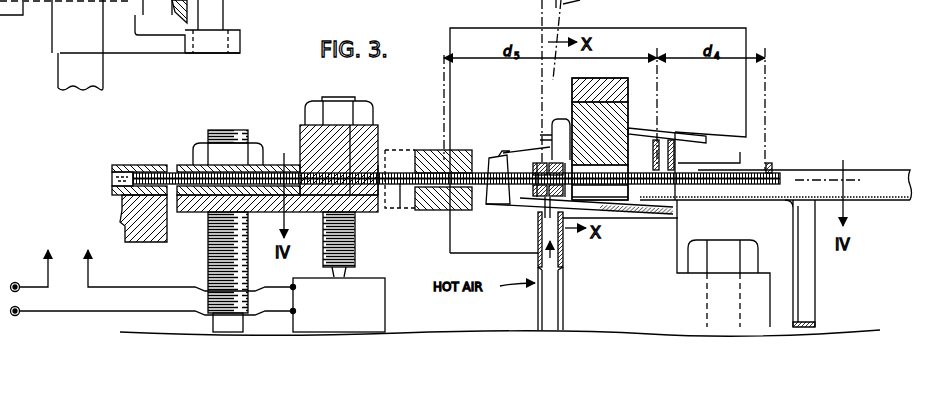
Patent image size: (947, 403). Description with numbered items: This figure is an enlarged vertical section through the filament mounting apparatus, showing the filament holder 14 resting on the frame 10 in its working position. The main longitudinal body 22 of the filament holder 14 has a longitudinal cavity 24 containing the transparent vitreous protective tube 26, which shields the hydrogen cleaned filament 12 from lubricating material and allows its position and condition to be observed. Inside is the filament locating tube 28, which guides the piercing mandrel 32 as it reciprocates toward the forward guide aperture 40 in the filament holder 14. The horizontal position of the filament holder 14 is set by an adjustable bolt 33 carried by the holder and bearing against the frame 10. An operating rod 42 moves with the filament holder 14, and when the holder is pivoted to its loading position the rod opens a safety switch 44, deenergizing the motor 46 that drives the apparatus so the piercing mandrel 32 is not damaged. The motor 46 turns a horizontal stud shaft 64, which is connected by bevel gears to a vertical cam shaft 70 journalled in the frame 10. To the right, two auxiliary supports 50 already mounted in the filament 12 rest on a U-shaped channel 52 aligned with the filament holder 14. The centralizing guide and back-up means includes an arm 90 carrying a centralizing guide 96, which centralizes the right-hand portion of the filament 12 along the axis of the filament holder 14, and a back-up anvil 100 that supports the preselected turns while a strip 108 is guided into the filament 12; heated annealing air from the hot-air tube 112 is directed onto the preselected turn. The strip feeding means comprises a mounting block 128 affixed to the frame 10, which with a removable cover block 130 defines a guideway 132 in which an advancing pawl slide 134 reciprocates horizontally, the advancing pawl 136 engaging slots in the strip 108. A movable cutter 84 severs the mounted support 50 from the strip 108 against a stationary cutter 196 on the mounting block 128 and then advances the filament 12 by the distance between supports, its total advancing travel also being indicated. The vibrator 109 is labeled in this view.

The frame 10 is at (841, 328).
The filament 12 is at (742, 172).
The filament holder 14 is at (296, 142).
The main longitudinal body 22 is at (160, 217).
The longitudinal cavity 24 is at (120, 200).
The transparent vitreous protective tube 26 is at (176, 215).
The filament locating tube 28 is at (112, 176).
The piercing mandrel 32 is at (400, 191).
The adjustable bolt 33 is at (212, 261).
The forward guide aperture 40 is at (378, 171).
The operating rod 42 is at (352, 238).
The safety switch 44 is at (372, 287).
The motor 46 is at (152, 271).
The auxiliary support 50 is at (661, 164).
The U-shaped channel 52 is at (893, 172).
The horizontal stud shaft 64 is at (36, 3).
The vertical cam shaft 70 is at (218, 12).
The movable cutter 84 is at (431, 160).
The arm 90 is at (632, 84).
The centralizing guide 96 is at (630, 112).
The back-up anvil 100 is at (540, 160).
The strip 108 is at (556, 118).
The vibrator 109 is at (946, 37).
The tube 112 is at (563, 288).
The mounting block 128 is at (663, 239).
The removable cover block 130 is at (470, 40).
The guideway 132 is at (507, 152).
The advancing pawl slide 134 is at (541, 228).
The advancing pawl 136 is at (492, 161).
The stationary cutter 196 is at (641, 155).